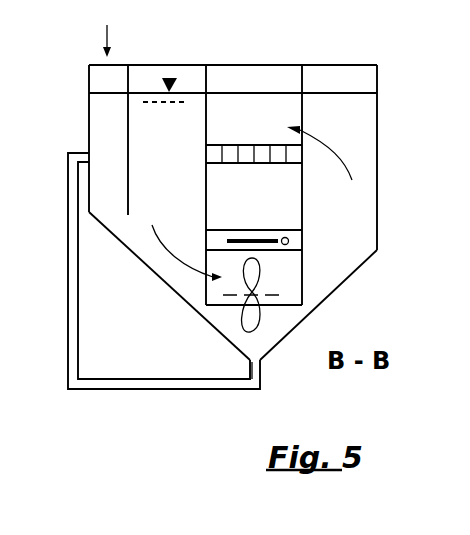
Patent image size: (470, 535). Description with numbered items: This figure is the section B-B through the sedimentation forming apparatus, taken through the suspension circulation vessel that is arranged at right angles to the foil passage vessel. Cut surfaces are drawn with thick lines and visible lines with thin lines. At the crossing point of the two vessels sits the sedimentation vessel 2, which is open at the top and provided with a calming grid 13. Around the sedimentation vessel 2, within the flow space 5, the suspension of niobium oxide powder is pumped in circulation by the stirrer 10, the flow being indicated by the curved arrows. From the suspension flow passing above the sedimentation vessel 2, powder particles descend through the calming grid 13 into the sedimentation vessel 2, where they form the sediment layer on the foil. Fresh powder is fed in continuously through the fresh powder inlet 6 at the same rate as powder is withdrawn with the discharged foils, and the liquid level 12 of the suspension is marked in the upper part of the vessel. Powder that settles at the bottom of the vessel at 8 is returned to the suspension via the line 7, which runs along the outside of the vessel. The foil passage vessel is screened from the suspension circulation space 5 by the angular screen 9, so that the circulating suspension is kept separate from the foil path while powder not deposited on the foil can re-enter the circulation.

The sedimentation vessel 2 is at (265, 192).
The flow space 5 is at (347, 140).
The fresh powder inlet 6 is at (107, 130).
The line 7 is at (73, 212).
The vessel bottom 8 is at (257, 372).
The angular screen 9 is at (287, 280).
The stirrer 10 is at (258, 322).
The liquid level 12 is at (177, 86).
The calming grid 13 is at (293, 157).